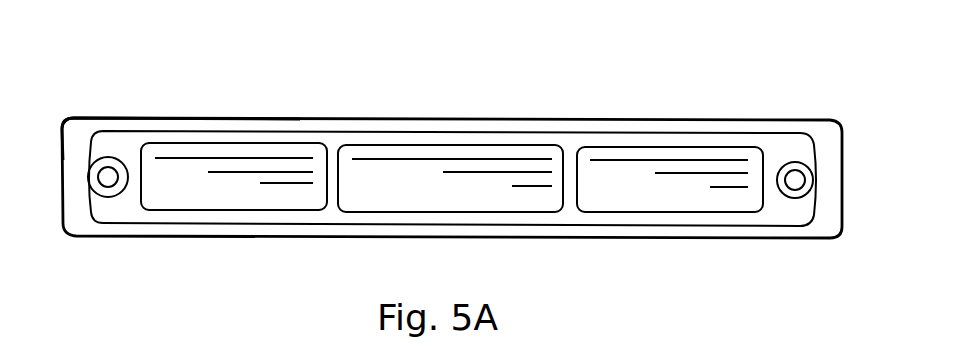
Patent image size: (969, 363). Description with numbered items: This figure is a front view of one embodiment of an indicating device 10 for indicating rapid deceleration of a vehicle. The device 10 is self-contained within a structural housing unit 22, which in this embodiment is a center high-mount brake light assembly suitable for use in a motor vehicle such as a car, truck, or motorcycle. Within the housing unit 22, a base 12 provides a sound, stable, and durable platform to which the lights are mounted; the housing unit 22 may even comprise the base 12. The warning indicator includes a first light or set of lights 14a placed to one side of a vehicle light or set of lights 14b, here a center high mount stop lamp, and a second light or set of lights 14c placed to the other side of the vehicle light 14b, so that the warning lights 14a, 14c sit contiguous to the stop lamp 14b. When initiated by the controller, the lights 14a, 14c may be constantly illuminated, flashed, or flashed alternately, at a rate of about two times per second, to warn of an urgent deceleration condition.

The indicating device 10 is at (622, 106).
The base 12 is at (83, 220).
The housing unit 22 is at (177, 132).
The first light or set of lights 14a is at (217, 192).
The vehicle light or set of lights 14b is at (427, 185).
The second light or set of lights 14c is at (655, 198).